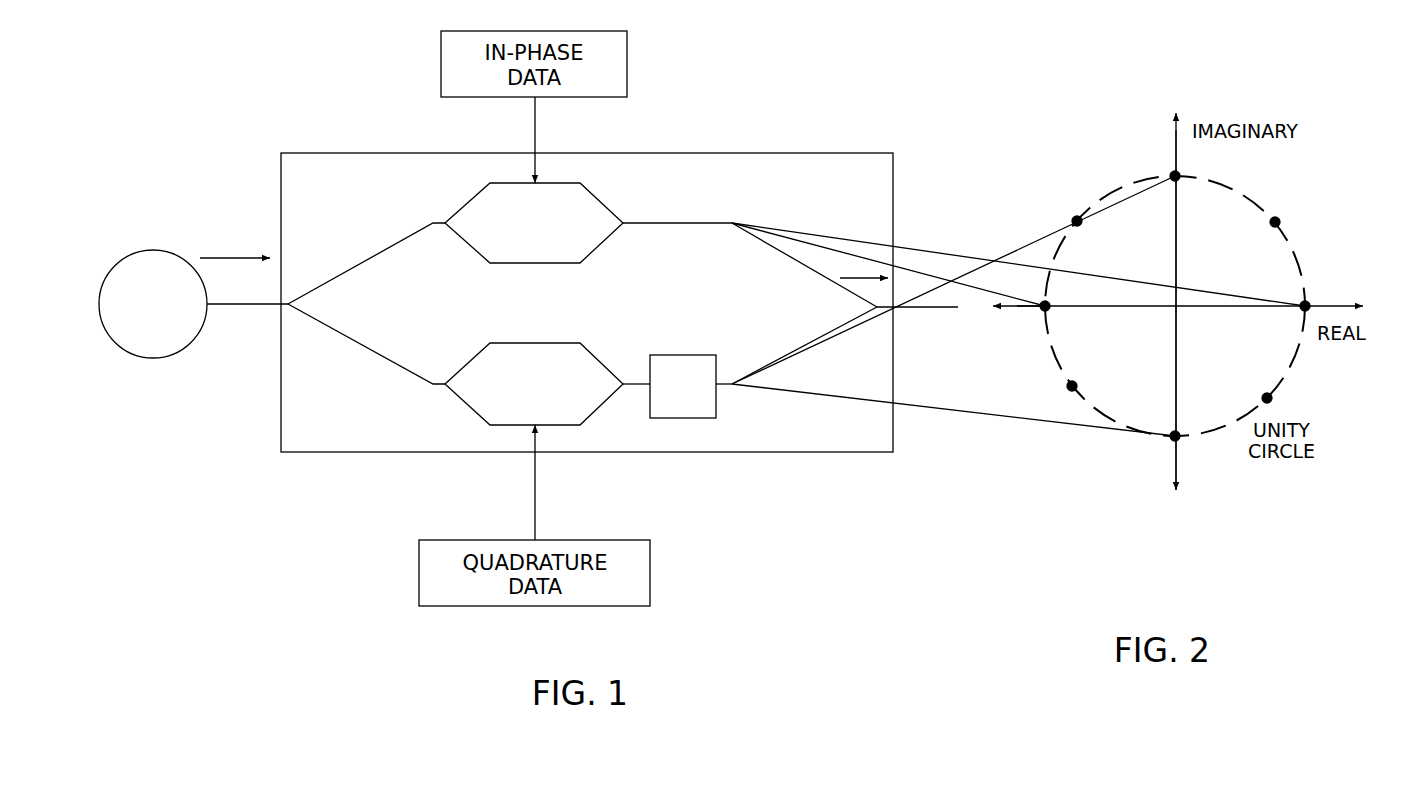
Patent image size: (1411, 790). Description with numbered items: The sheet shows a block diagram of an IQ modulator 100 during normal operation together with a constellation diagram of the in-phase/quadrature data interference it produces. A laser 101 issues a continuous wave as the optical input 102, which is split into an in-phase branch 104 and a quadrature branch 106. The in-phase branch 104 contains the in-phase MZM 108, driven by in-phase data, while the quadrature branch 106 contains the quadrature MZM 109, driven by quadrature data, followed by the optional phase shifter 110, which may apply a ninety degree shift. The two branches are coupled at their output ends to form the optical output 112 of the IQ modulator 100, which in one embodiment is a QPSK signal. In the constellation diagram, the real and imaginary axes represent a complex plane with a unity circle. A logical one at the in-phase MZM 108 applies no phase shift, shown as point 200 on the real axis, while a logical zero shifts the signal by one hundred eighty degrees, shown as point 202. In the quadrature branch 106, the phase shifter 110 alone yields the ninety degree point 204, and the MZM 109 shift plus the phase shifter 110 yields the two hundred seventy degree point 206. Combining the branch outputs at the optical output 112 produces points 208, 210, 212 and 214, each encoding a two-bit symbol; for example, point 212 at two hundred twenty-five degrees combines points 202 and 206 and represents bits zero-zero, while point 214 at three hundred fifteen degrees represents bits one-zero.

In FIG. 1, the IQ modulator 100 is at (860, 106).
In FIG. 1, the laser 101 is at (153, 250).
In FIG. 1, the optical input 102 is at (240, 306).
In FIG. 1, the in-phase branch 104 is at (363, 260).
In FIG. 1, the quadrature branch 106 is at (357, 343).
In FIG. 1, the in-phase MZM 108 is at (600, 200).
In FIG. 1, the quadrature MZM 109 is at (595, 355).
In FIG. 1, the phase shifter 110 is at (683, 386).
In FIG. 1, the optical output 112 is at (913, 310).
In FIG. 2, the point 200 is at (1308, 302).
In FIG. 2, the point 202 is at (1040, 310).
In FIG. 2, the point 204 is at (1170, 173).
In FIG. 2, the point 206 is at (1190, 440).
In FIG. 2, the point 208 is at (1280, 220).
In FIG. 2, the point 210 is at (1072, 217).
In FIG. 2, the point 212 is at (1068, 386).
In FIG. 2, the point 214 is at (1272, 397).